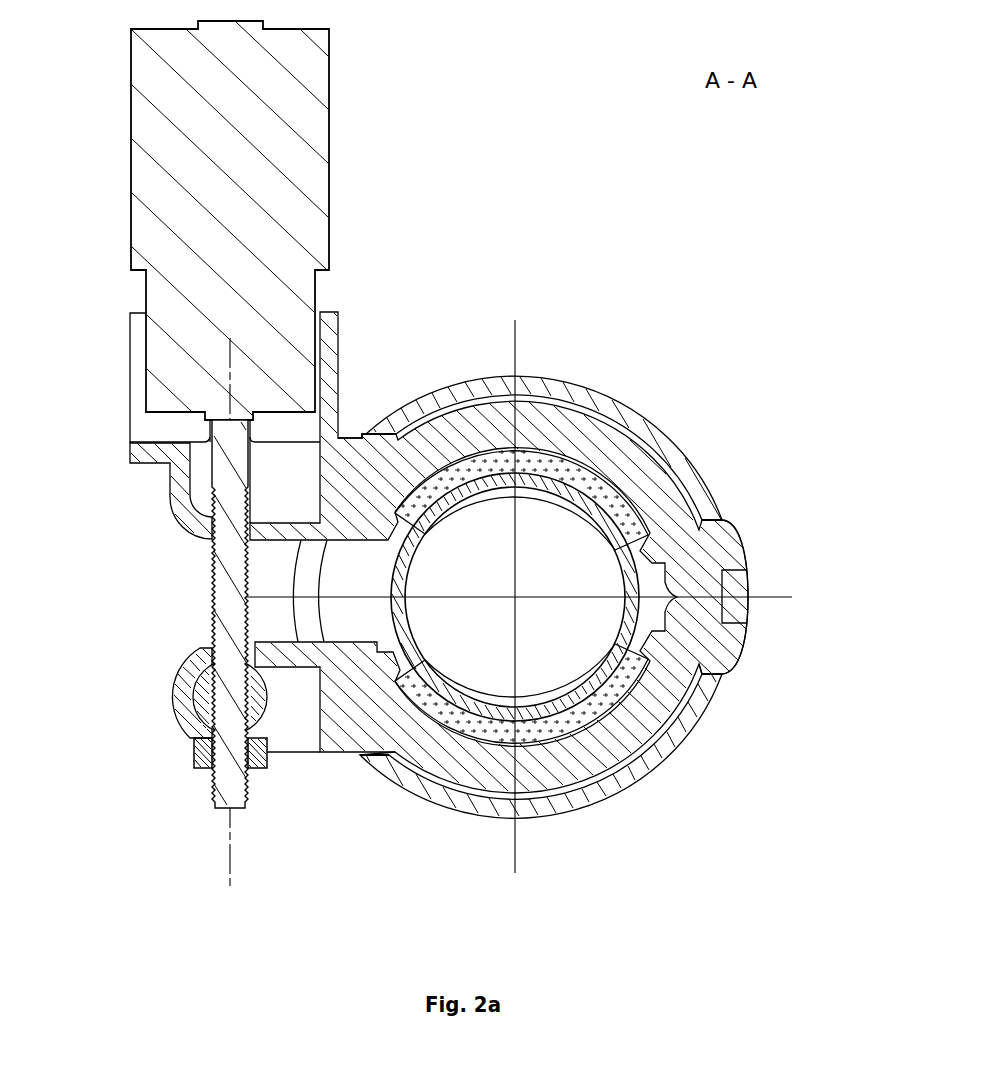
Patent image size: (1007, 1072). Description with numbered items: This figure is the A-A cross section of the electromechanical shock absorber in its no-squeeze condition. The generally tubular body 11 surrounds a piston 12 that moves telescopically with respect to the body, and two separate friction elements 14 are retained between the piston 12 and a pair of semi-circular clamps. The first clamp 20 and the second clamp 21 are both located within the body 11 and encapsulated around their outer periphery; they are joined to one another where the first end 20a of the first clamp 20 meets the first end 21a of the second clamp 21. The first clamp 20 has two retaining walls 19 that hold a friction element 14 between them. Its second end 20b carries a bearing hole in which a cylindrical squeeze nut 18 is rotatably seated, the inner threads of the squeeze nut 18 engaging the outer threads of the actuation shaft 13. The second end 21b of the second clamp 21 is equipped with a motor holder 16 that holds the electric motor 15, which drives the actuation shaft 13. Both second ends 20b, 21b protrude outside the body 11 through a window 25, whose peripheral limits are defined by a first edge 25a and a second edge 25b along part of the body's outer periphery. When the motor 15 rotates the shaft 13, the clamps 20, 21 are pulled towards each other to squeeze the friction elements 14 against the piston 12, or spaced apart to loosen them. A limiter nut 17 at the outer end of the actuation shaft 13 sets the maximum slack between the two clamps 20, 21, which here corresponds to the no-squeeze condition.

The tubular body 11 is at (467, 593).
The piston 12 is at (627, 560).
The actuation shaft 13 is at (222, 605).
The friction element 14 is at (600, 488).
The electric motor 15 is at (329, 170).
The motor holder 16 is at (131, 340).
The limiter nut 17 is at (194, 755).
The squeeze nut 18 is at (205, 703).
The retaining walls 19 is at (700, 660).
The first clamp 20 is at (575, 773).
The first end of the first clamp 20a is at (740, 608).
The second end of the first clamp 20b is at (185, 688).
The second clamp 21 is at (532, 410).
The first end of the second clamp 21a is at (740, 576).
The second end of the second clamp 21b is at (187, 515).
The window 25 is at (295, 578).
The first edge 25a is at (368, 433).
The second edge 25b is at (365, 755).